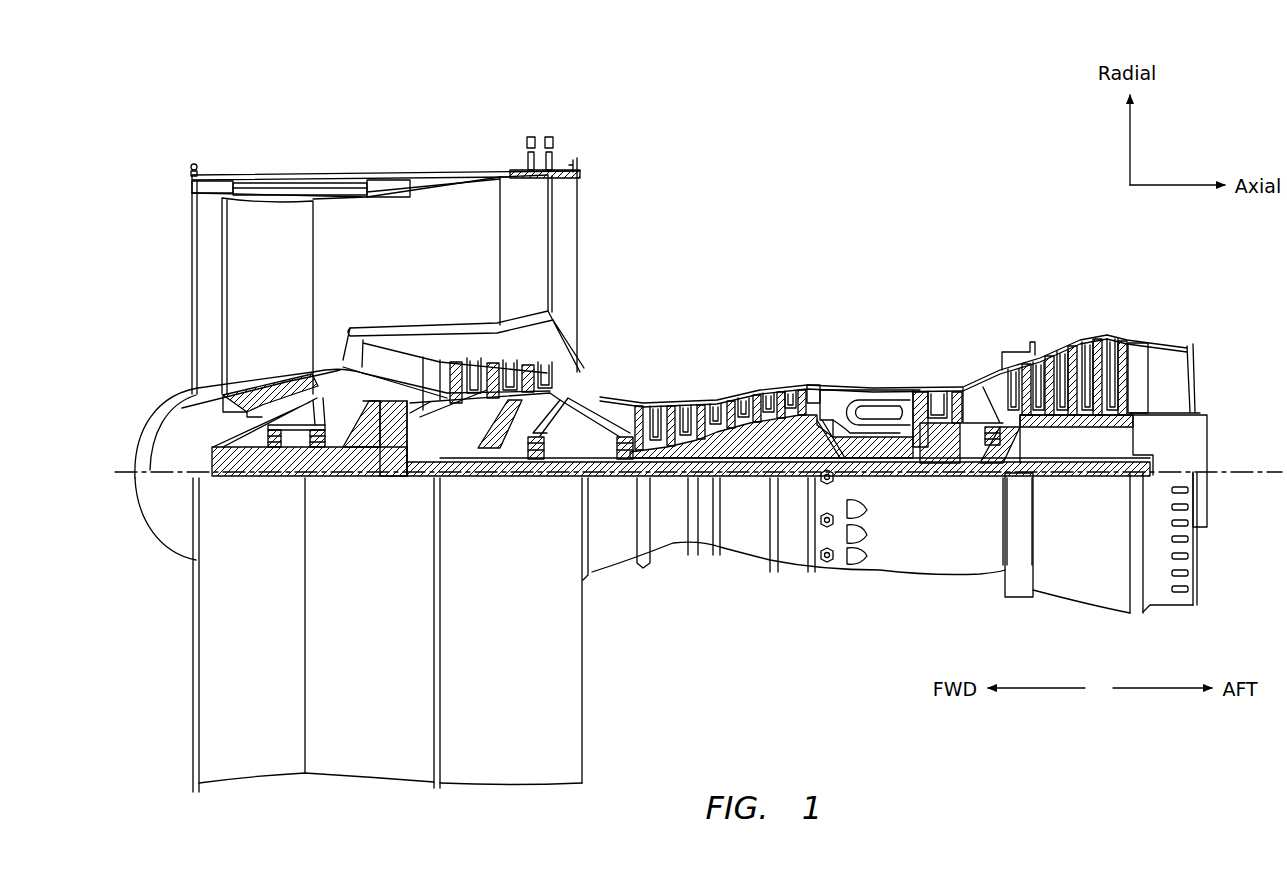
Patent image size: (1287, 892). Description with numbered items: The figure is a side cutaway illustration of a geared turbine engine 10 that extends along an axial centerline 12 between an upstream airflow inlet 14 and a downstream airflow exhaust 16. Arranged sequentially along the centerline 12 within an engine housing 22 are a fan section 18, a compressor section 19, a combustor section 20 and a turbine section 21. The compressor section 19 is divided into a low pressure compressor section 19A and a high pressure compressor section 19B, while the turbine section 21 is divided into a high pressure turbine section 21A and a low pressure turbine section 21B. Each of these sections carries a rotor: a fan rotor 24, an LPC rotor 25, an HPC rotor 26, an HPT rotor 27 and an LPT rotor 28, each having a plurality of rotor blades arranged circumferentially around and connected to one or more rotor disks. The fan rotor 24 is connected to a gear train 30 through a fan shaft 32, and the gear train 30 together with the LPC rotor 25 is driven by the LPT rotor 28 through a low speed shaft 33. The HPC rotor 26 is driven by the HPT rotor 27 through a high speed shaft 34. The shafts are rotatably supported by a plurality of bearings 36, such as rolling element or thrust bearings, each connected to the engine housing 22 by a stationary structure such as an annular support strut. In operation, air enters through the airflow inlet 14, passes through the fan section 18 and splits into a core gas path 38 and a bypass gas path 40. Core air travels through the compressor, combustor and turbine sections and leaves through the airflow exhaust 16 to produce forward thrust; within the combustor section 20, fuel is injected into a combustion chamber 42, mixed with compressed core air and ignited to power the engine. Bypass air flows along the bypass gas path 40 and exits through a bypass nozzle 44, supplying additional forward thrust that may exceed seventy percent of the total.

The geared turbine engine 10 is at (160, 155).
The axial centerline 12 is at (1275, 480).
The airflow inlet 14 is at (190, 268).
The airflow exhaust 16 is at (1192, 390).
The fan section 18 is at (355, 152).
The compressor section 19 is at (790, 92).
The low pressure compressor section 19A is at (580, 135).
The high pressure compressor section 19B is at (790, 318).
The combustor section 20 is at (810, 318).
The turbine section 21 is at (912, 246).
The high pressure turbine section 21A is at (985, 318).
The low pressure turbine section 21B is at (1000, 318).
The engine housing 22 is at (605, 587).
The fan rotor 24 is at (226, 400).
The LPC rotor 25 is at (490, 430).
The HPC rotor 26 is at (735, 438).
The HPT rotor 27 is at (950, 468).
The LPT rotor 28 is at (1070, 428).
The gear train 30 is at (387, 480).
The fan shaft 32 is at (258, 480).
The low speed shaft 33 is at (800, 482).
The high speed shaft 34 is at (870, 462).
The bearings 36 is at (295, 478).
The core gas path 38 is at (604, 398).
The bypass gas path 40 is at (411, 278).
The combustion chamber 42 is at (866, 412).
The bypass nozzle 44 is at (580, 250).